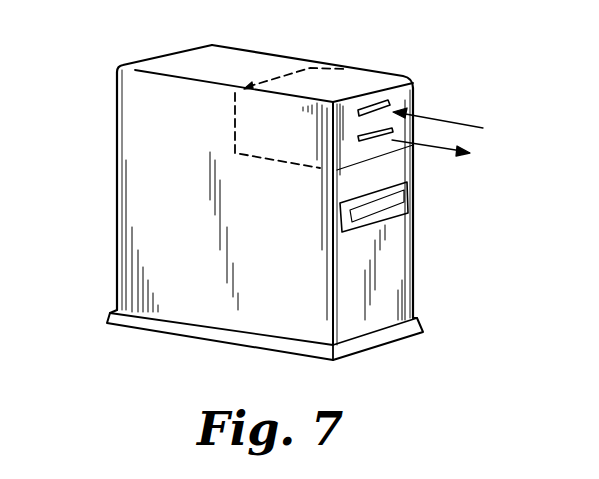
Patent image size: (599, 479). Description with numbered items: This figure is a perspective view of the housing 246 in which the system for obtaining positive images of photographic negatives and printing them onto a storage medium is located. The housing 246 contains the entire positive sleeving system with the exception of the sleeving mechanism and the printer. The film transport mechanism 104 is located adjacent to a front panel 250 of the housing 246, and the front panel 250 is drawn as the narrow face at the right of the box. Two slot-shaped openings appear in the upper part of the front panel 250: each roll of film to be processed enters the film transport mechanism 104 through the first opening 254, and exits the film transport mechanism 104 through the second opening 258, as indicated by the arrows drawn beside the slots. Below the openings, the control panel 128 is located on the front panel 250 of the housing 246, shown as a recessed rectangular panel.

The film transport mechanism 104 is at (343, 86).
The first opening 254 is at (390, 103).
The second opening 258 is at (367, 143).
The control panel 128 is at (387, 200).
The front panel 250 is at (393, 293).
The housing 246 is at (130, 197).